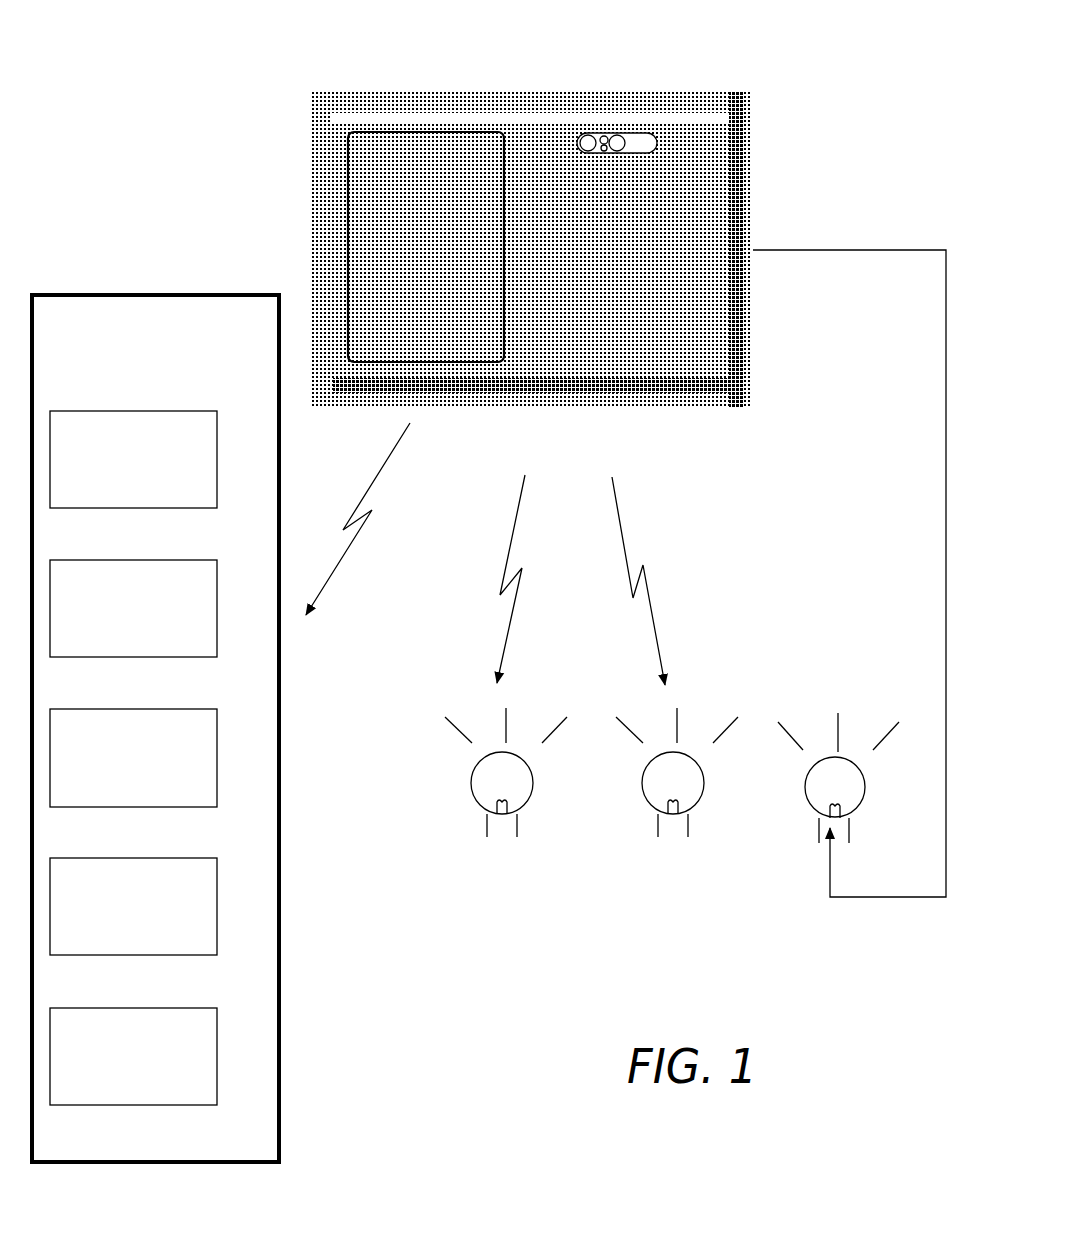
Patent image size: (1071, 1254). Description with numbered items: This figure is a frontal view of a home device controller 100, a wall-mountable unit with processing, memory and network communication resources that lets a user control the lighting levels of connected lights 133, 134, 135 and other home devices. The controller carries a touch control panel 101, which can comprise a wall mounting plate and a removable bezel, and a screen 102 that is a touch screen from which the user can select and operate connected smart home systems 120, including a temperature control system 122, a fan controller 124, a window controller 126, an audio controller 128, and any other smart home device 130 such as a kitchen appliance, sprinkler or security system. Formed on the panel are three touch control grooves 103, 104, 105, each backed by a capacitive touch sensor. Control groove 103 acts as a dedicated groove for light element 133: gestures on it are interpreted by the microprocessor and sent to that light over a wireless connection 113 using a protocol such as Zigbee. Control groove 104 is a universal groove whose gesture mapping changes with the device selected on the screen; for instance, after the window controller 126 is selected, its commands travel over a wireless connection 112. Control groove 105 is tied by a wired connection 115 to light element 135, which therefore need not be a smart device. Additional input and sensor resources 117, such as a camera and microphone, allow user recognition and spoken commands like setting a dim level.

The home device controller 100 is at (730, 73).
The touch control panel 101 is at (607, 245).
The screen 102 is at (385, 197).
The touch control groove 103 is at (552, 328).
The touch control groove 104 is at (615, 332).
The touch control groove 105 is at (680, 330).
The input and/or sensor resources 117 is at (640, 140).
The wireless connection 112 is at (358, 519).
The wireless connection 113 is at (534, 579).
The wired connection 115 is at (849, 573).
The smart home systems 120 is at (155, 728).
The temperature control system 122 is at (133, 459).
The fan controller 124 is at (133, 608).
The window controller 126 is at (133, 758).
The audio controller 128 is at (133, 906).
The smart home device 130 is at (133, 1056).
The light element 133 is at (506, 774).
The light element 134 is at (677, 774).
The light element 135 is at (837, 778).